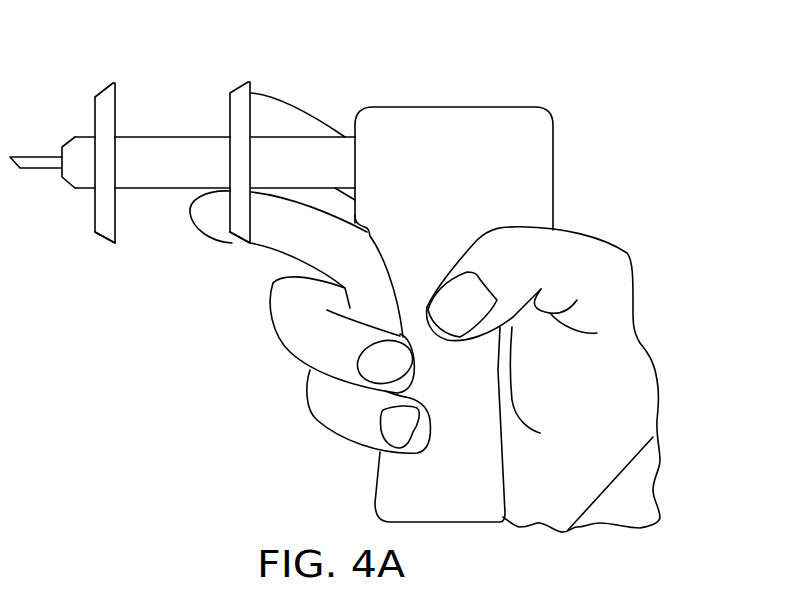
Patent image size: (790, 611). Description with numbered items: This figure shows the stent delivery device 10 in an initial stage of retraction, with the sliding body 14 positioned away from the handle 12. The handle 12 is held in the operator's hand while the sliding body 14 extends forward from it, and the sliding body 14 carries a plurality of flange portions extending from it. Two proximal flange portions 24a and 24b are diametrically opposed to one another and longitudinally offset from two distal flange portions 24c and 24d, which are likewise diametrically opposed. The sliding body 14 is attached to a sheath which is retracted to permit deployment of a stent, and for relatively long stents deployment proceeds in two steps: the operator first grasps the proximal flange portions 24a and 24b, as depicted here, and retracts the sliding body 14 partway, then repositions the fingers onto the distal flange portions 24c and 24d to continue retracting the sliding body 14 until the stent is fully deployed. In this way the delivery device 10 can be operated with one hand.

The stent delivery device 10 is at (600, 90).
The handle 12 is at (588, 124).
The sliding body 14 is at (173, 100).
The proximal flange portion 24a is at (246, 82).
The proximal flange portion 24b is at (232, 230).
The distal flange portion 24c is at (112, 82).
The distal flange portion 24d is at (96, 231).